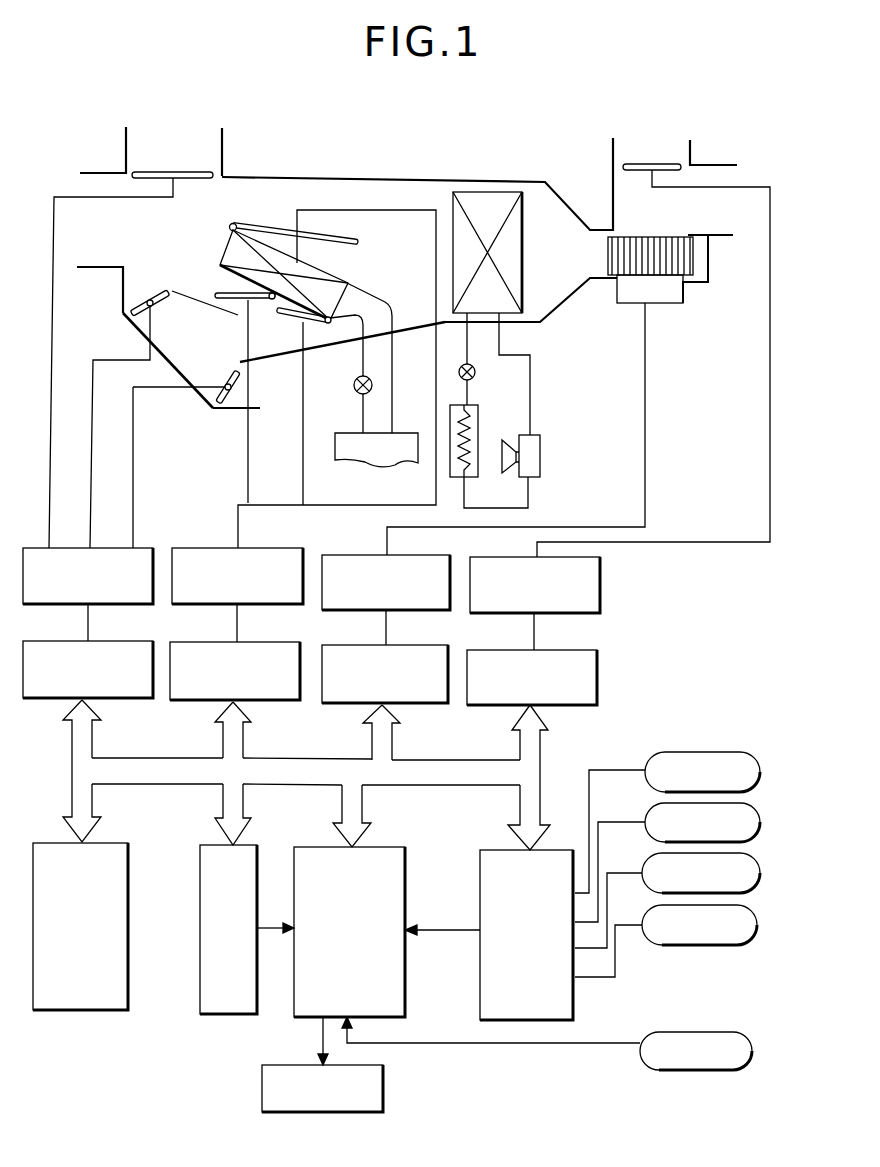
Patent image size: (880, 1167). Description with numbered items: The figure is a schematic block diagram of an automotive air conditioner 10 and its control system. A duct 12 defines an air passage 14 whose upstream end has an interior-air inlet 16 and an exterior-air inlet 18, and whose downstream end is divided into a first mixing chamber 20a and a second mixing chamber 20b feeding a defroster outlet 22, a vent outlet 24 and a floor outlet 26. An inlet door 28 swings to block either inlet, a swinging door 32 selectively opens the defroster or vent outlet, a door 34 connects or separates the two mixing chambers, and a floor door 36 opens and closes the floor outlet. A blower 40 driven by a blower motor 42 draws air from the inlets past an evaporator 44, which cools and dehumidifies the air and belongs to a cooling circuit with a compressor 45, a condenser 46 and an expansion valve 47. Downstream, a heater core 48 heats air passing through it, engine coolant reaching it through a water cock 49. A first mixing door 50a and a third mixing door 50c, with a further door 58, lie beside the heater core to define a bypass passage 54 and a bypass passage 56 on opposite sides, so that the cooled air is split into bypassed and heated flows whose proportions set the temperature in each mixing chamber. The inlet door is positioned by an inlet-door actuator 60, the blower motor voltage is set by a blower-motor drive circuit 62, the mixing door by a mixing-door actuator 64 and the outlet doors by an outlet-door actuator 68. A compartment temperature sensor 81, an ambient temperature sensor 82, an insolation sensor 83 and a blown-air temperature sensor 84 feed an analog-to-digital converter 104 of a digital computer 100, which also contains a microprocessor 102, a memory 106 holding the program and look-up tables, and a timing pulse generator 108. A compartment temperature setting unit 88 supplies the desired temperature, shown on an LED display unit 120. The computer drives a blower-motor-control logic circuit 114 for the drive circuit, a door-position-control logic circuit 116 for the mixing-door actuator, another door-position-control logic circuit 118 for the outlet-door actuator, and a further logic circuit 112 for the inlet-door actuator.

The air conditioner 10 is at (368, 138).
The duct 12 is at (313, 177).
The air passage 14 is at (540, 277).
The interior-air inlet 16 is at (677, 150).
The exterior-air inlet 18 is at (728, 217).
The first mixing chamber 20a is at (176, 249).
The second mixing chamber 20b is at (159, 339).
The defroster outlet 22 is at (203, 148).
The vent outlet 24 is at (90, 249).
The floor outlet 26 is at (271, 396).
The inlet door 28 is at (645, 162).
The swinging door 32 is at (156, 172).
The door 34 is at (143, 313).
The floor door 36 is at (227, 398).
The blower 40 is at (670, 280).
The blower motor 42 is at (670, 307).
The evaporator 44 is at (523, 227).
The compressor 45 is at (543, 468).
The condenser 46 is at (480, 427).
The expansion valve 47 is at (475, 375).
The heater core 48 is at (330, 272).
The water cock 49 is at (357, 393).
The first mixing door 50a is at (262, 225).
The third mixing door 50c is at (283, 312).
The bypass passage 54 is at (420, 188).
The bypass passage 56 is at (317, 332).
The mode door 58 is at (237, 307).
The inlet-door actuator 60 is at (588, 614).
The blower-motor drive circuit 62 is at (437, 612).
The mixing-door actuator 64 is at (290, 604).
The outlet-door actuator 68 is at (140, 604).
The compartment temperature sensor 81 is at (645, 782).
The ambient temperature sensor 82 is at (652, 837).
The insolation sensor 83 is at (650, 888).
The blown-air temperature sensor 84 is at (650, 945).
The compartment temperature setting unit 88 is at (655, 1072).
The digital computer 100 is at (297, 1019).
The microprocessor 102 is at (405, 872).
The analog-to-digital converter 104 is at (480, 1008).
The memory 106 is at (128, 870).
The timing pulse generator 108 is at (198, 1000).
The logic circuit 112 is at (585, 705).
The blower-motor-control logic circuit 114 is at (433, 703).
The door-position-control logic circuit 116 is at (283, 700).
The door-position-control logic circuit 118 is at (133, 698).
The LED display unit 120 is at (385, 1107).